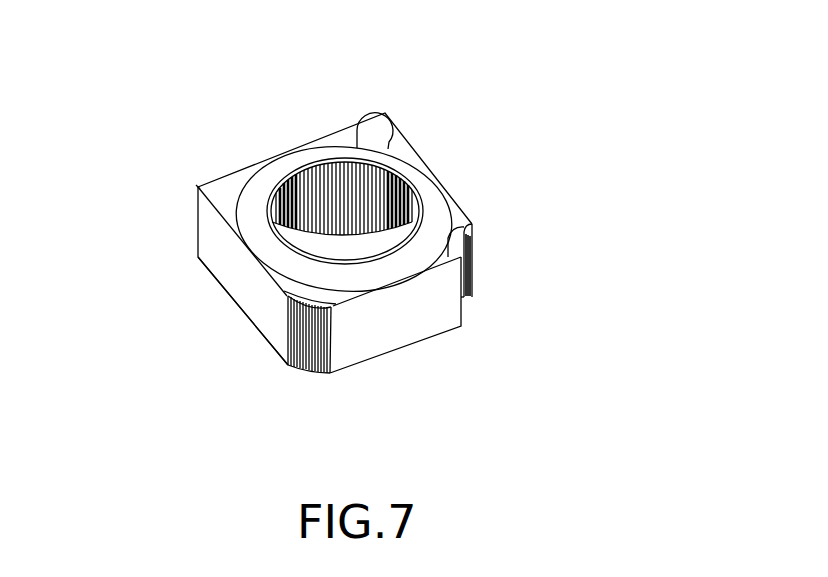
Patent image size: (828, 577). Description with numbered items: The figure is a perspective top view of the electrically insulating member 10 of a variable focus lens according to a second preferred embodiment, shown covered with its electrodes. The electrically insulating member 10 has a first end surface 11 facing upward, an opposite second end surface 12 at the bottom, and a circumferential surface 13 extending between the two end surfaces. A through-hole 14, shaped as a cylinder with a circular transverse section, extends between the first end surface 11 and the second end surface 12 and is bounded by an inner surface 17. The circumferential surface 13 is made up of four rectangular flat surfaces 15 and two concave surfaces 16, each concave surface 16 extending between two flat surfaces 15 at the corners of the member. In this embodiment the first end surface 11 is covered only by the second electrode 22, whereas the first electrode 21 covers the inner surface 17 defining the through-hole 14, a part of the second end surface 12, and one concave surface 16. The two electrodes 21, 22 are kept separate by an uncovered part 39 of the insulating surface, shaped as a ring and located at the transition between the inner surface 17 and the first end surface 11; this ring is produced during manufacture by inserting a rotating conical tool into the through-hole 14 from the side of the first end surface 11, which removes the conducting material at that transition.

The electrically insulating member 10 is at (218, 250).
The first end surface 11 is at (222, 192).
The second end surface 12 is at (227, 287).
The circumferential surface 13 is at (210, 233).
The through-hole 14 is at (337, 247).
The flat surface 15 is at (443, 280).
The concave surface 16 is at (475, 267).
The inner surface 17 is at (326, 199).
The first electrode 21 is at (400, 247).
The second electrode 22 is at (328, 150).
The uncovered part 39 is at (275, 187).